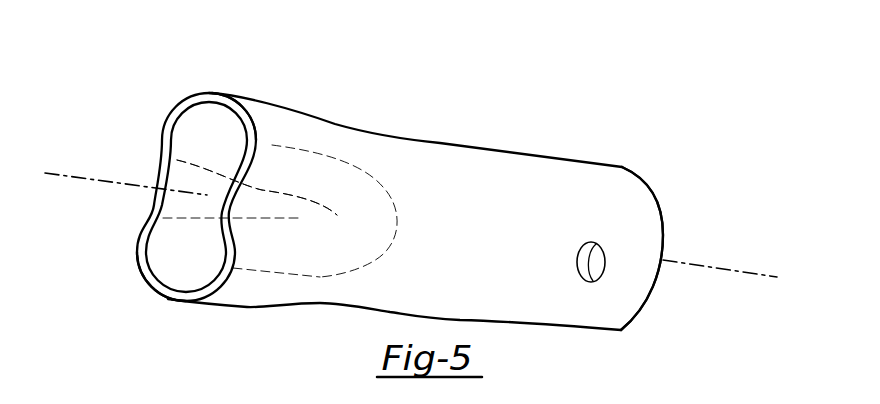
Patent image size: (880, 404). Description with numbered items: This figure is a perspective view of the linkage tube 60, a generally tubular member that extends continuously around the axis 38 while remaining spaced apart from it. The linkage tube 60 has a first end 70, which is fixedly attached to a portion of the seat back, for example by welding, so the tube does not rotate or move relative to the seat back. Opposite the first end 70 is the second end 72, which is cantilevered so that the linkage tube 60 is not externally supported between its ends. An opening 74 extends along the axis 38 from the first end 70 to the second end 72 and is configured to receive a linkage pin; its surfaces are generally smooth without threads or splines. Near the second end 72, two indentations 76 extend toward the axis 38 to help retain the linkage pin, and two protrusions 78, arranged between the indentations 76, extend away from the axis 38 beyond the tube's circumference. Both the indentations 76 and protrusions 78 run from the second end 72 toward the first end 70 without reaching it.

The linkage tube 60 is at (470, 142).
The first end 70 is at (663, 213).
The second end 72 is at (193, 103).
The opening 74 is at (188, 148).
The indentation 76 is at (163, 189).
The protrusion 78 is at (225, 93).
The axis 38 is at (717, 272).